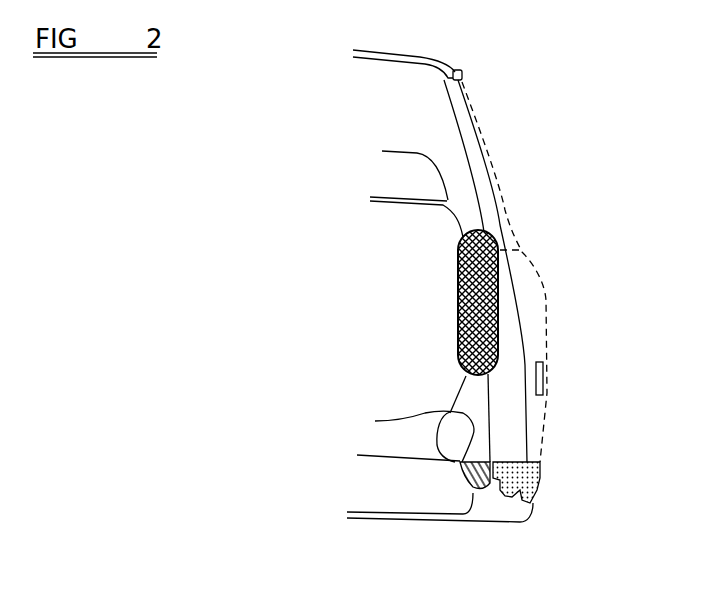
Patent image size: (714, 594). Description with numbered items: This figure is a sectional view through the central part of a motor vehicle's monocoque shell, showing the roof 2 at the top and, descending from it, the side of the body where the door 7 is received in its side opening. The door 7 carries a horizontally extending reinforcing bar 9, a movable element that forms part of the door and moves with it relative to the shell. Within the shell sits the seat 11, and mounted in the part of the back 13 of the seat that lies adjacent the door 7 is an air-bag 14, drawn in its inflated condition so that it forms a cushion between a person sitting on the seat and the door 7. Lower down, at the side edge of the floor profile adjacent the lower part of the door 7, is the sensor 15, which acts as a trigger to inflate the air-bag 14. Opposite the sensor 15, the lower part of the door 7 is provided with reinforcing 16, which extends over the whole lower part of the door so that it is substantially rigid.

The roof 2 is at (437, 58).
The door 7 is at (547, 302).
The reinforcing bar 9 is at (543, 385).
The seat 11 is at (390, 412).
The back of the seat 13 is at (420, 264).
The air-bag 14 is at (487, 229).
The sensor 15 is at (466, 478).
The reinforcing 16 is at (533, 480).